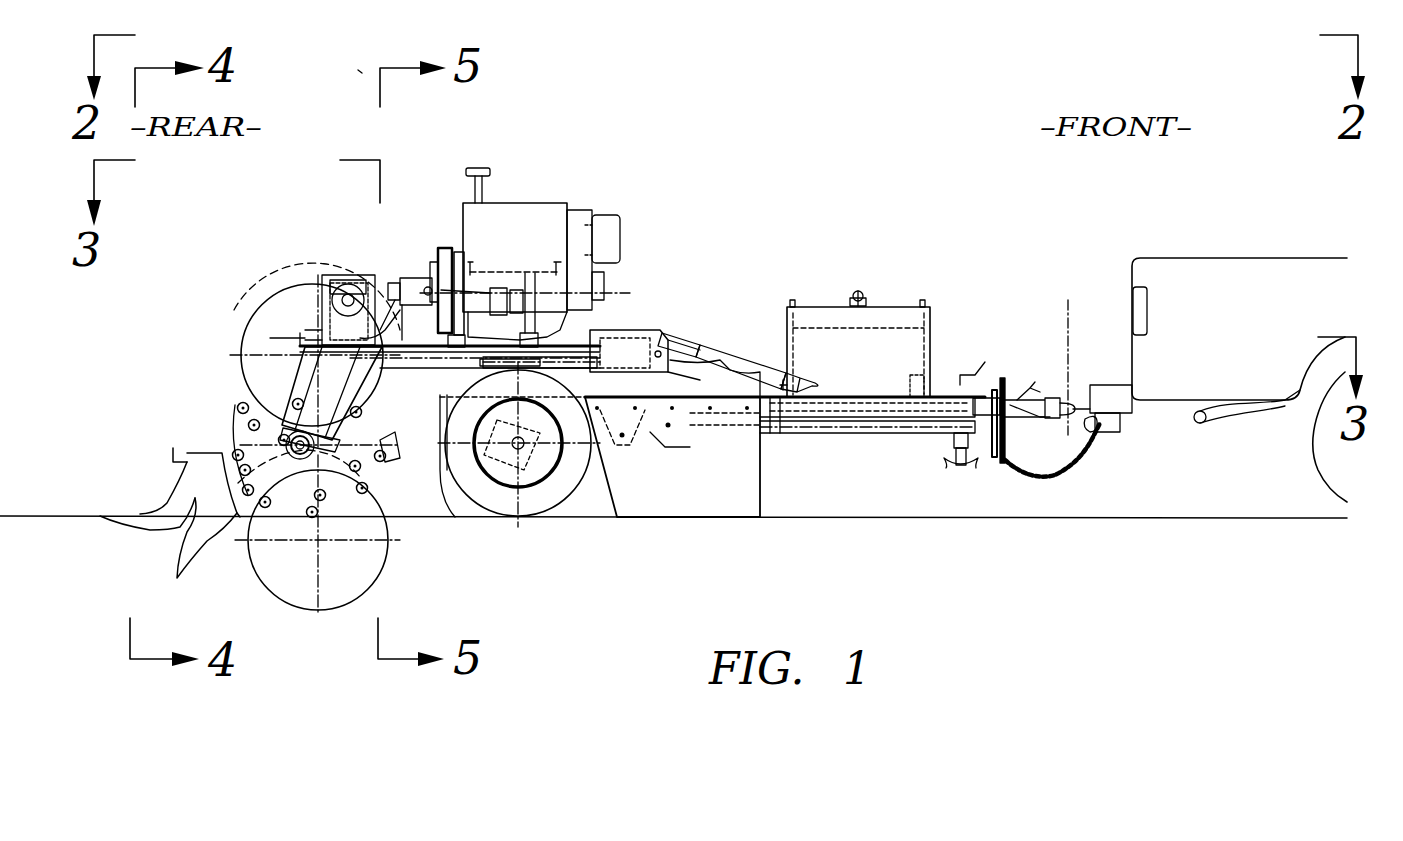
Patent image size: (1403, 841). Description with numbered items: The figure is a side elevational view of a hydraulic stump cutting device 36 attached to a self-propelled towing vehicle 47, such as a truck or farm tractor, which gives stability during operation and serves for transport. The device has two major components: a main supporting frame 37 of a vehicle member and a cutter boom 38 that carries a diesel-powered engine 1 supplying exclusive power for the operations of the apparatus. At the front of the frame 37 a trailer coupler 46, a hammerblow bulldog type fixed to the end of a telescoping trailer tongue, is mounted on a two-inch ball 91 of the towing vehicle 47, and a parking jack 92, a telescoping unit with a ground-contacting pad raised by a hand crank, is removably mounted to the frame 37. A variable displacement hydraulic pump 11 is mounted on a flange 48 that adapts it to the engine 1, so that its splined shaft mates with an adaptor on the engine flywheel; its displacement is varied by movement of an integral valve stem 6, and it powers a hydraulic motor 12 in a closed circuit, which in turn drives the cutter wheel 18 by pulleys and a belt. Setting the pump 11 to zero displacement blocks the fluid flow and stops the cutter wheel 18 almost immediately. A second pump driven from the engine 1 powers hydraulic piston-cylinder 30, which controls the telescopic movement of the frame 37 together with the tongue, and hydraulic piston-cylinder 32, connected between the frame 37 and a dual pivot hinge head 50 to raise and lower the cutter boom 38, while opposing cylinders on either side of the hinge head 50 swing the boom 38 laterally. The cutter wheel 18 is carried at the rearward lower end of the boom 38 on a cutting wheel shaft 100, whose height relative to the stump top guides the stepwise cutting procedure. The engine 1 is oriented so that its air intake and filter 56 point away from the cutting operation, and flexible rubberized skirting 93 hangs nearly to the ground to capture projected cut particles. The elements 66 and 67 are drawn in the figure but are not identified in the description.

The diesel-powered engine 1 is at (560, 203).
The integral valve stem 6 is at (402, 268).
The variable displacement hydraulic pump 11 is at (395, 285).
The hydraulic motor 12 is at (340, 280).
The cutter wheel 18 is at (387, 540).
The hydraulic piston-cylinder 30 is at (768, 520).
The hydraulic piston-cylinder 32 is at (742, 350).
The hydraulic stump cutting device 36 is at (360, 70).
The main supporting frame 37 is at (958, 390).
The cutter boom 38 is at (408, 495).
The trailer coupler 46 is at (1055, 396).
The towing vehicle 47 is at (1185, 257).
The flange 48 is at (437, 248).
The dual pivot hinge head 50 is at (636, 332).
The air intake and filter 56 is at (610, 225).
The blade 66 is at (173, 448).
The lower cutter disc 67 is at (302, 612).
The ball 91 is at (1060, 425).
The parking jack 92 is at (960, 472).
The rubberized skirting 93 is at (450, 488).
The cutting wheel shaft 100 is at (248, 440).